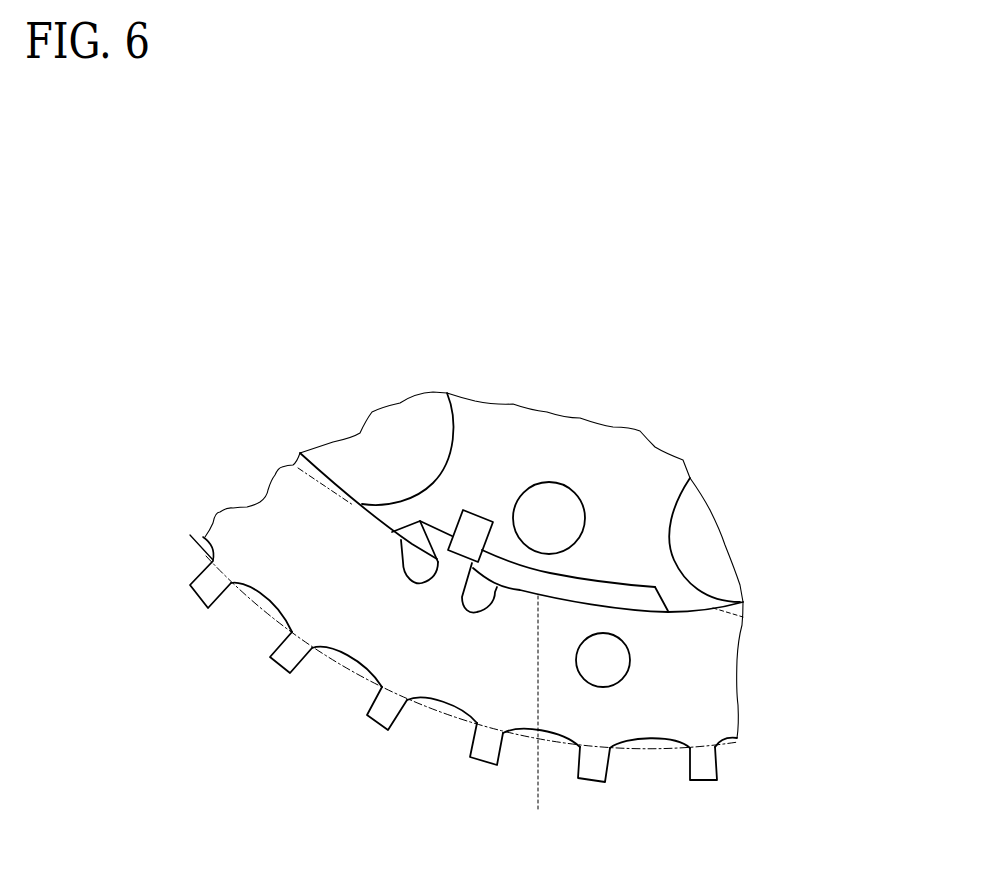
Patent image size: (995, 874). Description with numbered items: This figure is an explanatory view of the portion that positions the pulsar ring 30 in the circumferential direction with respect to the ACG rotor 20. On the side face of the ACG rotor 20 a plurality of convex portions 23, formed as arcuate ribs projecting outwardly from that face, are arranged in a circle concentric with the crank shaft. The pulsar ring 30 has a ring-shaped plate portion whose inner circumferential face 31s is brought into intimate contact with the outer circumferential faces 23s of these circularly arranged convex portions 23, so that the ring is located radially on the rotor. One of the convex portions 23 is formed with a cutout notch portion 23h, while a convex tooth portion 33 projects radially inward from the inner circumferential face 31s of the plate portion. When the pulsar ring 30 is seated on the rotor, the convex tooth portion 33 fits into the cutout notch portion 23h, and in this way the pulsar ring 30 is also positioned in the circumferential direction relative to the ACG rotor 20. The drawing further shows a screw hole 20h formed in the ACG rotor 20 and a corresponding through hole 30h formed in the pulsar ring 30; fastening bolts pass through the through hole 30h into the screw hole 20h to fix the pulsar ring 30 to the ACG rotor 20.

The ACG rotor 20 is at (563, 443).
The pulsar ring 30 is at (253, 520).
The convex portion 23 is at (598, 594).
The cutout notch portion 23h is at (462, 545).
The convex tooth portion 33 is at (457, 567).
The inner circumferential face 31s is at (687, 608).
The outer circumferential face 23s is at (557, 726).
The screw hole 20h is at (727, 679).
The through hole 30h is at (608, 662).